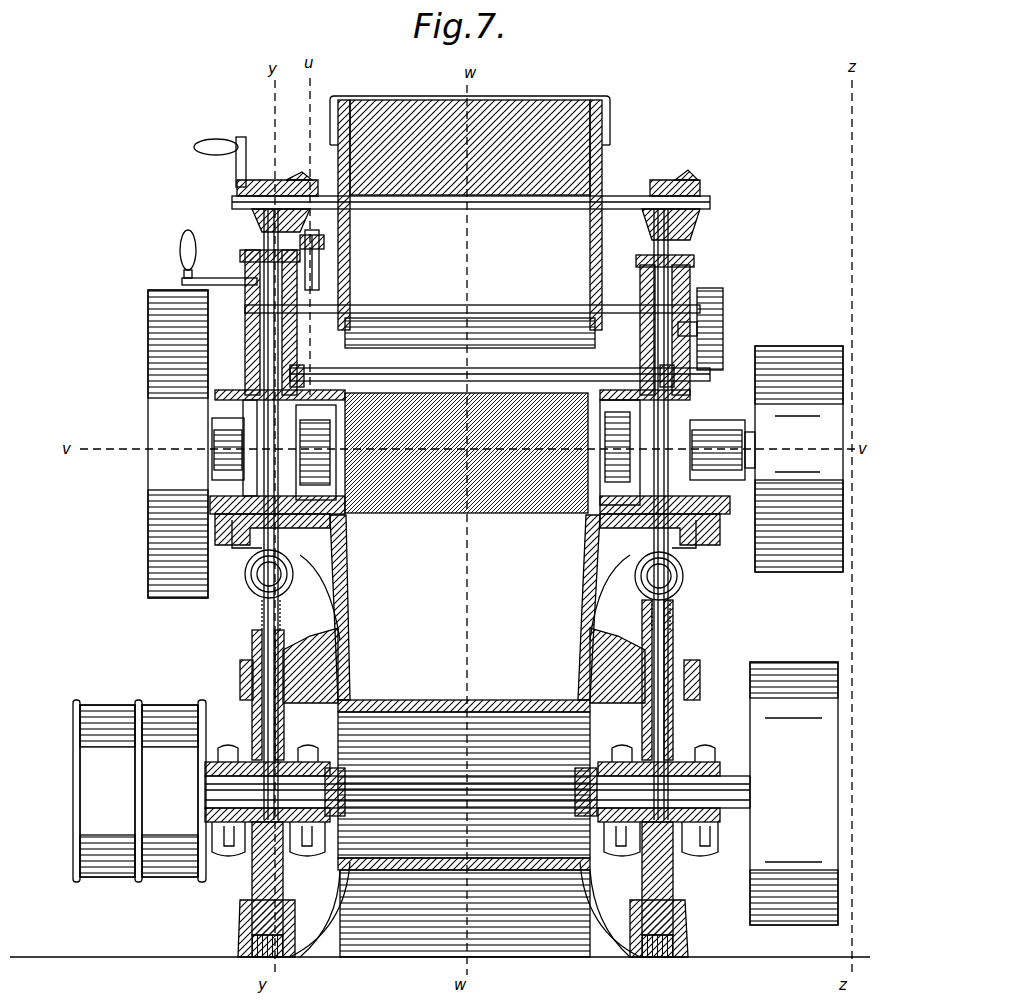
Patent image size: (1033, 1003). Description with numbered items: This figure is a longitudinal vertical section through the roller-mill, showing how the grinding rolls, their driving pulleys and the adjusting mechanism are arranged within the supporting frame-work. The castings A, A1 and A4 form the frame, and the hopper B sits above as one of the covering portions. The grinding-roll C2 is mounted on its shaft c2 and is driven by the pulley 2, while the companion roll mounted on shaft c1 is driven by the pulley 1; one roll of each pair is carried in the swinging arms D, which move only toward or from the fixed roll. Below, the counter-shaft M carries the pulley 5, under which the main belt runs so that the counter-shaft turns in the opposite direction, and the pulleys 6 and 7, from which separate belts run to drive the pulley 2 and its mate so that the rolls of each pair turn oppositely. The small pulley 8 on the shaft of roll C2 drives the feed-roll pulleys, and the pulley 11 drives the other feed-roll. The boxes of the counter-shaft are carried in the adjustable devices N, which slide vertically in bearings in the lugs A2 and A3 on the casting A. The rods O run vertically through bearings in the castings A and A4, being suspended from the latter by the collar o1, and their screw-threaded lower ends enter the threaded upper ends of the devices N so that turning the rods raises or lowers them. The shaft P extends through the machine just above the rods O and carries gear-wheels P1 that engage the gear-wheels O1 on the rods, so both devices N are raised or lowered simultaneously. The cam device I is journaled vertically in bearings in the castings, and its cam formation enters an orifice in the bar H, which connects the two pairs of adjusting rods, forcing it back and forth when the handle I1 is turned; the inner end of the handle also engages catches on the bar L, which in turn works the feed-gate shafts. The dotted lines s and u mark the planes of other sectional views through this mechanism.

The hopper B is at (602, 158).
The shaft P is at (518, 210).
The gear-wheels P1 is at (300, 180).
The gear-wheels O1 is at (258, 228).
The collar o1 is at (286, 240).
The rods O is at (258, 262).
The cam device I is at (250, 337).
The bar L is at (336, 272).
The casting A4 is at (690, 275).
The bar H is at (488, 350).
The dotted line s s is at (250, 374).
The grinding-roll C2 is at (466, 453).
The dotted line u u is at (316, 451).
The roll shaft c2 is at (214, 432).
The casting A1 is at (684, 416).
The small pulley 8 is at (722, 450).
The roll shaft c1 is at (752, 440).
The pulley 11 is at (700, 329).
The pulley 2 is at (178, 444).
The pulley 1 is at (799, 459).
The pulley 5 is at (794, 793).
The pulley 6 is at (170, 791).
The pulley 7 is at (104, 791).
The casting A is at (610, 616).
The lug A3 is at (286, 658).
The swinging arms D is at (248, 548).
The adjustable devices N is at (254, 712).
The lug A2 is at (240, 910).
The counter-shaft M is at (414, 782).
The crank or handle I1 is at (212, 280).